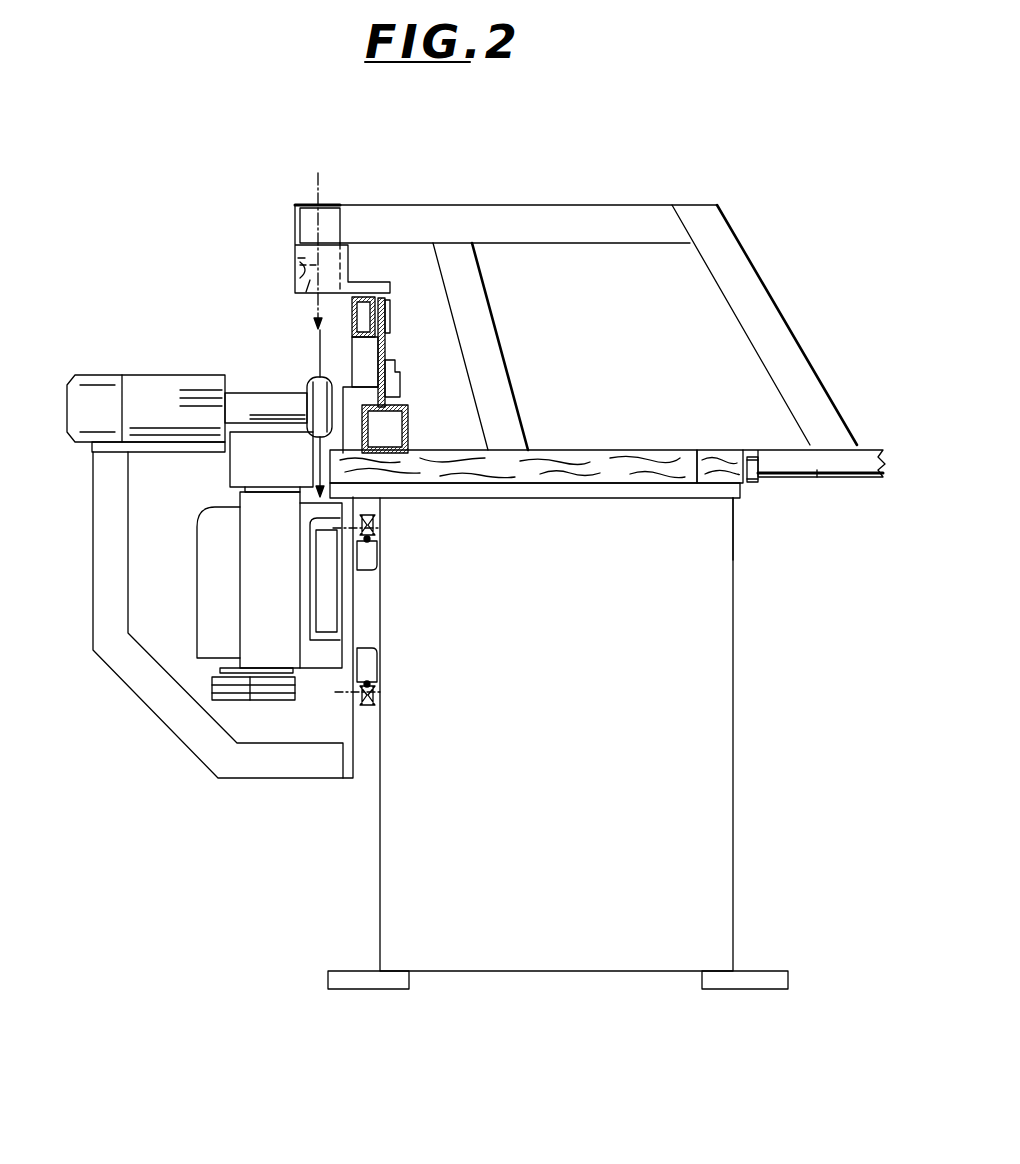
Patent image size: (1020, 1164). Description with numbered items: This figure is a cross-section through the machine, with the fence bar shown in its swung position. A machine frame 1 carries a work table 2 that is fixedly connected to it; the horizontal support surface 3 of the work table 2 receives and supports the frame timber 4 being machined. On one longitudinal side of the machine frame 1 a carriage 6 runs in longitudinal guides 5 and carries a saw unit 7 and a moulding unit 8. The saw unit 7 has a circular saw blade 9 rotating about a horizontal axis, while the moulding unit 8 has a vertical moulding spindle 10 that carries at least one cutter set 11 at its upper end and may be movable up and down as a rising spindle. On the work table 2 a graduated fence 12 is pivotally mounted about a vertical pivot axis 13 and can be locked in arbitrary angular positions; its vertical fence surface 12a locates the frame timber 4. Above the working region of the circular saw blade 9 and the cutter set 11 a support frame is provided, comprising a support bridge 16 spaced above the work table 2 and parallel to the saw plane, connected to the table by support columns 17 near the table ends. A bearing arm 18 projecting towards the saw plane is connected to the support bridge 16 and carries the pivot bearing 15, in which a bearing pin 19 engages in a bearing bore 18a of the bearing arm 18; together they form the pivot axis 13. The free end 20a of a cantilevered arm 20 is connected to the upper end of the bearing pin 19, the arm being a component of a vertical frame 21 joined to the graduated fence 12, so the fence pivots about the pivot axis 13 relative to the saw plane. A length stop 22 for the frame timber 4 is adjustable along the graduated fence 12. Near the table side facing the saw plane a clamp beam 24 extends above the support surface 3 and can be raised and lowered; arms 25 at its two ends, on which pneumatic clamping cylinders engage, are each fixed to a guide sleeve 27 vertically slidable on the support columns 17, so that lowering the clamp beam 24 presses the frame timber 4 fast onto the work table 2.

The machine frame 1 is at (712, 780).
The work table 2 is at (722, 488).
The horizontal support surface 3 is at (677, 475).
The frame timber 4 is at (605, 462).
The longitudinal guides 5 is at (372, 663).
The carriage 6 is at (347, 753).
The saw unit 7 is at (243, 375).
The moulding unit 8 is at (237, 612).
The circular saw blade 9 is at (318, 340).
The moulding spindle 10 is at (254, 491).
The cutter set 11 is at (250, 457).
The graduated fence 12 is at (790, 437).
The vertical fence surface 12a is at (817, 477).
The pivot axis 13 is at (322, 190).
The pivot bearing 15 is at (288, 258).
The support bridge 16 is at (362, 295).
The support columns 17 is at (362, 360).
The bearing arm 18 is at (292, 282).
The bearing bore 18a is at (293, 265).
The bearing pin 19 is at (306, 292).
The cantilevered arm 20 is at (473, 228).
The free end 20a is at (327, 232).
The vertical frame 21 is at (688, 204).
The length stop 22 is at (763, 478).
The clamp beam 24 is at (403, 433).
The arms 25 is at (392, 372).
The guide sleeve 27 is at (360, 398).